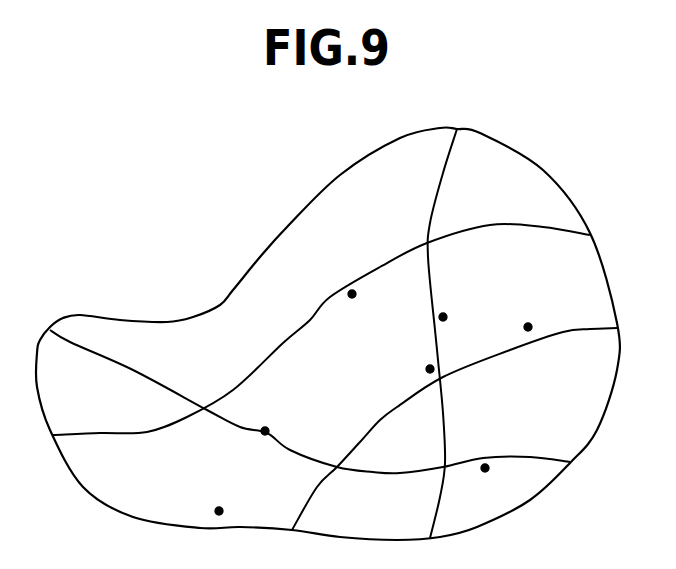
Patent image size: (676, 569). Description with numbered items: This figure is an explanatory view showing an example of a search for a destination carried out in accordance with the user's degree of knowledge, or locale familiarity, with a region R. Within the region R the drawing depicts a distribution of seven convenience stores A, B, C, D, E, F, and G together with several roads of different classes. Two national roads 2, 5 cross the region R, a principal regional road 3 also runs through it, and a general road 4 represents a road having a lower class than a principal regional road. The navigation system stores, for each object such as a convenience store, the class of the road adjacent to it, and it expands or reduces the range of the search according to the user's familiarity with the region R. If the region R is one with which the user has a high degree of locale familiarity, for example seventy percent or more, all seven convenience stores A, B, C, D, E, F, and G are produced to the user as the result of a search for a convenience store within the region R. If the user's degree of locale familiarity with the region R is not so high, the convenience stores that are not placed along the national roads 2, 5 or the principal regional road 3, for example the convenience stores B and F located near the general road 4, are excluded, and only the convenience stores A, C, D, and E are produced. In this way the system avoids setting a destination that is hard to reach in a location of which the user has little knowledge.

The region R is at (328, 333).
The national road 2 is at (177, 395).
The principal regional road 3 is at (181, 420).
The general road 4 is at (563, 332).
The national road 5 is at (510, 223).
The convenience store A is at (274, 416).
The convenience store B is at (231, 500).
The convenience store C is at (344, 309).
The convenience store D is at (418, 362).
The convenience store E is at (449, 301).
The convenience store F is at (525, 311).
The convenience store G is at (484, 483).